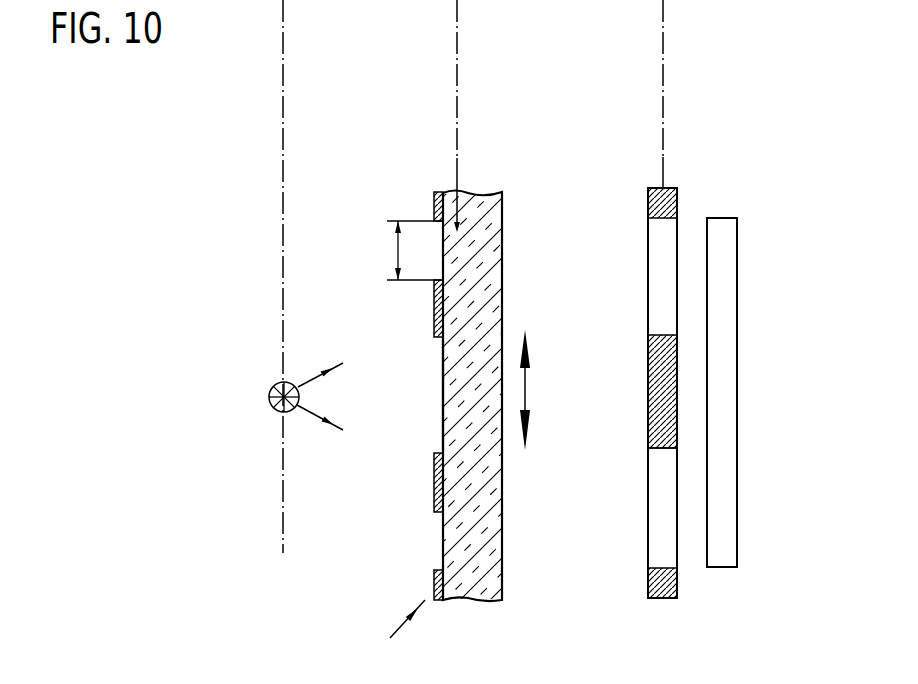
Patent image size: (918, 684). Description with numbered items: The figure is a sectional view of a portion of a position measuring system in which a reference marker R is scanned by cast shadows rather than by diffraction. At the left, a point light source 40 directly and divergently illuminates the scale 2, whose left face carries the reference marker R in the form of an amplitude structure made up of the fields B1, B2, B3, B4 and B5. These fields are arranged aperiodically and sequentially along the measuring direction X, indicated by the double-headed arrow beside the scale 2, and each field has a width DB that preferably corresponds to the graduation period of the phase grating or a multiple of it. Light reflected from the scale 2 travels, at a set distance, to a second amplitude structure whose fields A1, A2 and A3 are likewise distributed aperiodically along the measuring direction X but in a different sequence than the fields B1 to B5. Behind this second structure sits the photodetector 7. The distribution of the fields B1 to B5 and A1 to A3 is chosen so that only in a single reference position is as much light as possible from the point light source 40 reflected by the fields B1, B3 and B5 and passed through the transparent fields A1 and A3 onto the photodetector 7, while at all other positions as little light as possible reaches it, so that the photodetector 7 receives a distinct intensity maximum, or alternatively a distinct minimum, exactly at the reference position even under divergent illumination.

The scale 2 is at (500, 200).
The first field of amplitude structure B B1 is at (442, 252).
The second field of amplitude structure B B2 is at (434, 303).
The third field of amplitude structure B B3 is at (443, 385).
The fourth field of amplitude structure B B4 is at (434, 483).
The fifth field of amplitude structure B B5 is at (443, 542).
The width of a reference marker field DB is at (391, 250).
The point light source 40 is at (270, 393).
The measuring direction X is at (538, 390).
The reference marker R is at (391, 618).
The first field of amplitude structure A A1 is at (660, 300).
The second field of amplitude structure A A2 is at (658, 418).
The third field of amplitude structure A A3 is at (660, 527).
The photodetector 7 is at (727, 260).